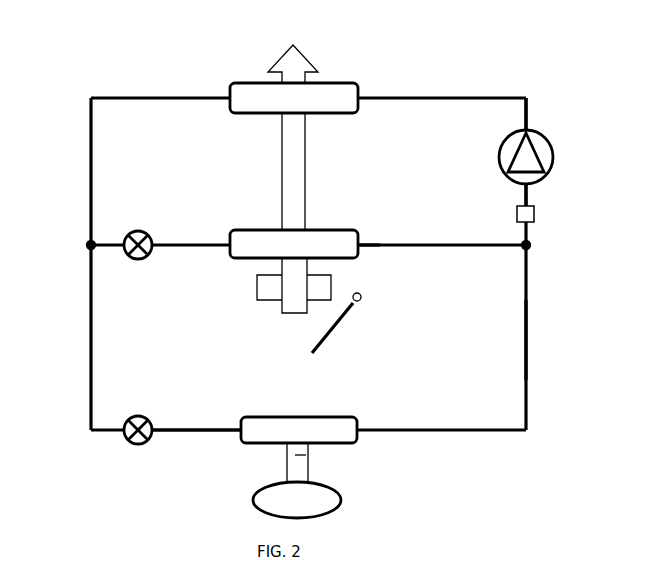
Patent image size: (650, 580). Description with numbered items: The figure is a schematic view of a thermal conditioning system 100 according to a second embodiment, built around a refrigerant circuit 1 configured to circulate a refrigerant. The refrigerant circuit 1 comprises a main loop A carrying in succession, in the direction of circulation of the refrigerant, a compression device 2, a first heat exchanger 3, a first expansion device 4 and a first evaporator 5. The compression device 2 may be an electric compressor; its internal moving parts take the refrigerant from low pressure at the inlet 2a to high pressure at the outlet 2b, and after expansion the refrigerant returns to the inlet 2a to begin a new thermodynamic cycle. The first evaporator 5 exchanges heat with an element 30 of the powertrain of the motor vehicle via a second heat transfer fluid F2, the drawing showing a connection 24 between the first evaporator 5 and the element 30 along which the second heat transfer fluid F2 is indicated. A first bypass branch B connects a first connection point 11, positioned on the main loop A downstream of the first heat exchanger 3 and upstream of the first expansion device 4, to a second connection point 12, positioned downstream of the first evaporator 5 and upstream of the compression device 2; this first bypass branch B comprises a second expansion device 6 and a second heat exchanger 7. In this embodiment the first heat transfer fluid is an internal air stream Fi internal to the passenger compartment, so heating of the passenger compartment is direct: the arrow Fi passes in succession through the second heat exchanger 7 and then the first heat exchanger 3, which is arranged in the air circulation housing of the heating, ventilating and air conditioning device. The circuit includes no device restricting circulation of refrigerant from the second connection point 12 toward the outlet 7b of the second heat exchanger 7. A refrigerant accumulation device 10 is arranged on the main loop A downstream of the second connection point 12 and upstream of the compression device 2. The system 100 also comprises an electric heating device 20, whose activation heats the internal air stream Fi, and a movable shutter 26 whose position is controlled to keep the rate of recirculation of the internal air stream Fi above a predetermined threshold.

The thermal conditioning system 100 is at (196, 66).
The refrigerant circuit 1 is at (539, 318).
The main loop A is at (90, 136).
The first bypass branch B is at (410, 243).
The compression device 2 is at (522, 157).
The inlet of the compression device 2a is at (528, 183).
The outlet of the compression device 2b is at (525, 132).
The first heat exchanger 3 is at (333, 100).
The first expansion device 4 is at (143, 416).
The first evaporator 5 is at (318, 425).
The second expansion device 6 is at (143, 230).
The second heat exchanger 7 is at (280, 242).
The outlet of the second heat exchanger 7b is at (372, 246).
The refrigerant accumulation device 10 is at (535, 217).
The first connection point 11 is at (88, 247).
The second connection point 12 is at (530, 245).
The electric heating device 20 is at (265, 289).
The duct 24 is at (287, 470).
The movable shutter 26 is at (343, 322).
The element of a powertrain 30 is at (325, 498).
The internal air stream Fi is at (292, 168).
The second heat transfer fluid F2 is at (308, 455).